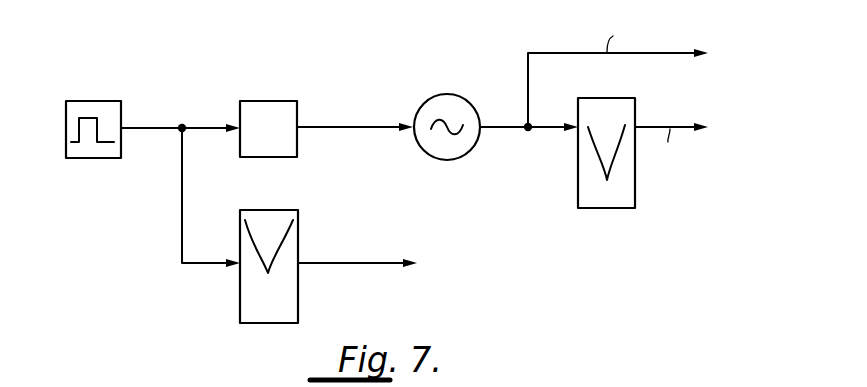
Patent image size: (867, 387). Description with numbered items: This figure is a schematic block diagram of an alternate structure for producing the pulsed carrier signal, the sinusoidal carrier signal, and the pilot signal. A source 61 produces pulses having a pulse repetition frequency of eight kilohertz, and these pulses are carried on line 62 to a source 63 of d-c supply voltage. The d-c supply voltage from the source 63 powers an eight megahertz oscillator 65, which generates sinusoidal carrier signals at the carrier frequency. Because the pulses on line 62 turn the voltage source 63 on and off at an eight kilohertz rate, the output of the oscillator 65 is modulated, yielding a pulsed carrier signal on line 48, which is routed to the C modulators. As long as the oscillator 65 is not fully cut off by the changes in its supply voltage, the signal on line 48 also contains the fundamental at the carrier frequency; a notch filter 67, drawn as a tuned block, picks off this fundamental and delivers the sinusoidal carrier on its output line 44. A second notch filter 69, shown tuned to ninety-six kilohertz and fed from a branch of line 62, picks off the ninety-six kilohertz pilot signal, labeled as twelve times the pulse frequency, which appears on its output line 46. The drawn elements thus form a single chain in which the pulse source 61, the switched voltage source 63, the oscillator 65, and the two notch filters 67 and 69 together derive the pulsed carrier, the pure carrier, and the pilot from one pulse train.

The source of pulses 61 is at (90, 84).
The line 62 is at (137, 111).
The source of d-c supply voltage 63 is at (270, 84).
The oscillator 65 is at (460, 81).
The notch filter 67 is at (617, 82).
The notch filter 69 is at (258, 193).
The line 48 is at (553, 52).
The carrier output line fc 44 is at (650, 126).
The 12fp output line 46 is at (335, 265).